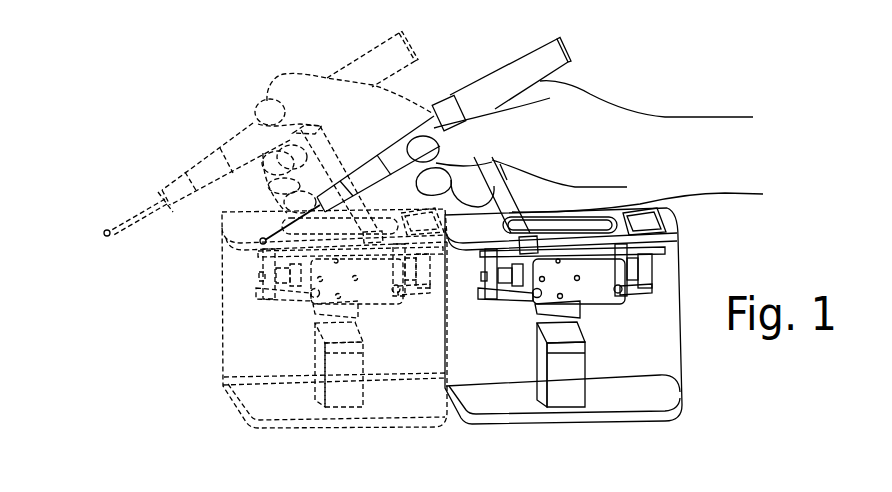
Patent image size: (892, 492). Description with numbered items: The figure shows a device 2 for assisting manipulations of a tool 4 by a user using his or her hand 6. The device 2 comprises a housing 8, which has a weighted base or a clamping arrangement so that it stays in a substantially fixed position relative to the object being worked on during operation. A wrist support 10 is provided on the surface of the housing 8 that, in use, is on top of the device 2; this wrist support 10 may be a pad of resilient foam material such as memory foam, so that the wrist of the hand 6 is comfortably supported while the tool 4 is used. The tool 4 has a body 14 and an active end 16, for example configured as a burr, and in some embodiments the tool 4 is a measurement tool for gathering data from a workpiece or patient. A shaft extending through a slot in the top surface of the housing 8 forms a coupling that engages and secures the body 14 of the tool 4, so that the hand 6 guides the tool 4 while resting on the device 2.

The device 2 is at (451, 345).
The tool 4 is at (308, 139).
The hand 6 is at (303, 78).
The housing 8 is at (681, 283).
The wrist support 10 is at (650, 227).
The body 14 is at (335, 72).
The active end 16 is at (104, 236).